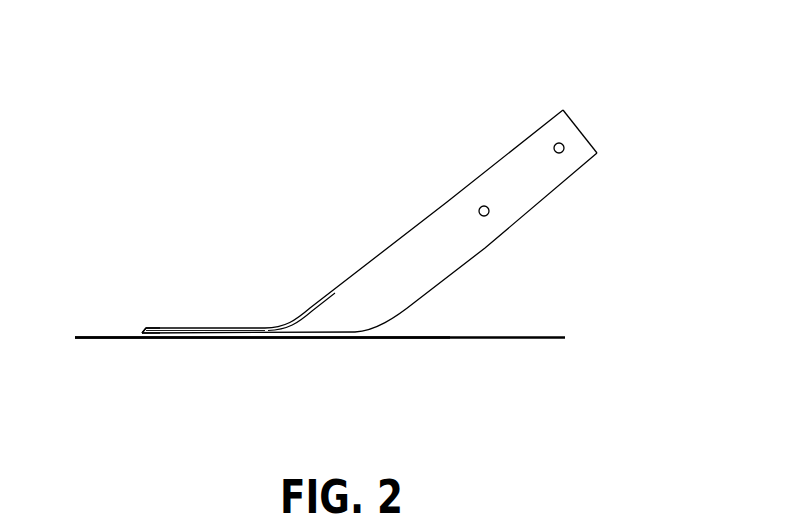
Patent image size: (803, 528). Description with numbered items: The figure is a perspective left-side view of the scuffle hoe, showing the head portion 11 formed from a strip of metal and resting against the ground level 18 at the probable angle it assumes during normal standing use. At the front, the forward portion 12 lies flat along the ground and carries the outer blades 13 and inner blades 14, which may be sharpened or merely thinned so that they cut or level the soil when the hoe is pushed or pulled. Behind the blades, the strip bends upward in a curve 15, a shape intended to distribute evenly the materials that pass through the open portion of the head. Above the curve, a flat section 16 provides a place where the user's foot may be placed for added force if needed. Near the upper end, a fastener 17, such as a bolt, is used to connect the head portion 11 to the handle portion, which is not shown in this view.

The head portion 11 is at (295, 312).
The forward portion 12 is at (141, 326).
The outer blades 13 is at (220, 322).
The inner blades 14 is at (238, 339).
The curve 15 is at (363, 339).
The flat section 16 is at (447, 291).
The fastener 17 is at (547, 142).
The ground level 18 is at (490, 340).